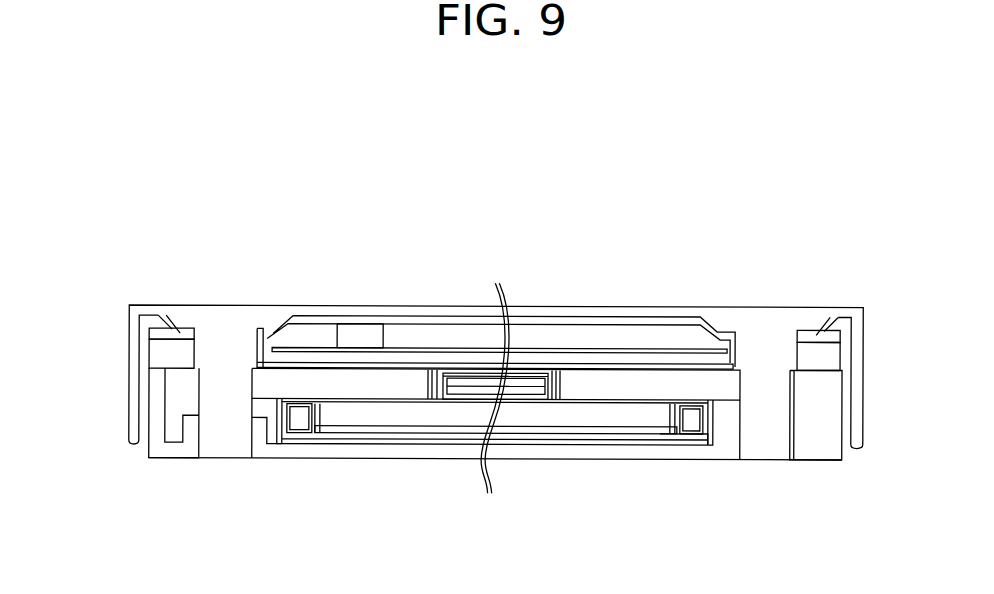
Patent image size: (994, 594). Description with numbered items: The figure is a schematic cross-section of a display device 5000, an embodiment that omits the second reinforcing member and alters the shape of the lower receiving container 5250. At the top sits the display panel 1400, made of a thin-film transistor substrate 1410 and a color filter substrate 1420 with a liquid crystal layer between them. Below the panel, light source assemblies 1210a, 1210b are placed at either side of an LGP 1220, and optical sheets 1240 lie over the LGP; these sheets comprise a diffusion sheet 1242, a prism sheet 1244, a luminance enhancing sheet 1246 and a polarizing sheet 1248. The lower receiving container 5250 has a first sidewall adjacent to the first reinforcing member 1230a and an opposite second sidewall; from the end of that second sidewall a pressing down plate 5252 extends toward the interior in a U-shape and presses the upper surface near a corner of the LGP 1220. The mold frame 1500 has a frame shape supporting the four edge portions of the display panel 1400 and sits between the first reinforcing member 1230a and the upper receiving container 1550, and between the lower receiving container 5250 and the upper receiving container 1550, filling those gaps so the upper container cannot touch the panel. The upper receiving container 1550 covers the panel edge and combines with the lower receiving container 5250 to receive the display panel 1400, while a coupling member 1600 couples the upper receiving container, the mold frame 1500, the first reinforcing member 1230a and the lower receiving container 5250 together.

The display device 5000 is at (525, 160).
The display panel 1400 is at (494, 390).
The color filter substrate 1420 is at (482, 335).
The thin-film transistor substrate 1410 is at (549, 355).
The first reinforcing member 1230a is at (273, 335).
The upper receiving container 1550 is at (352, 322).
The pressing down plate 5252 is at (652, 387).
The mold frame 1500 is at (158, 352).
The coupling member 1600 is at (222, 452).
The light source assembly 1210a is at (302, 425).
The LGP 1220 is at (375, 420).
The optical sheets 1240 is at (494, 430).
The diffusion sheet 1242 is at (449, 400).
The prism sheet 1244 is at (510, 410).
The luminance enhancing sheet 1246 is at (505, 380).
The polarizing sheet 1248 is at (428, 537).
The light source assembly 1210b is at (694, 426).
The lower receiving container 5250 is at (727, 455).